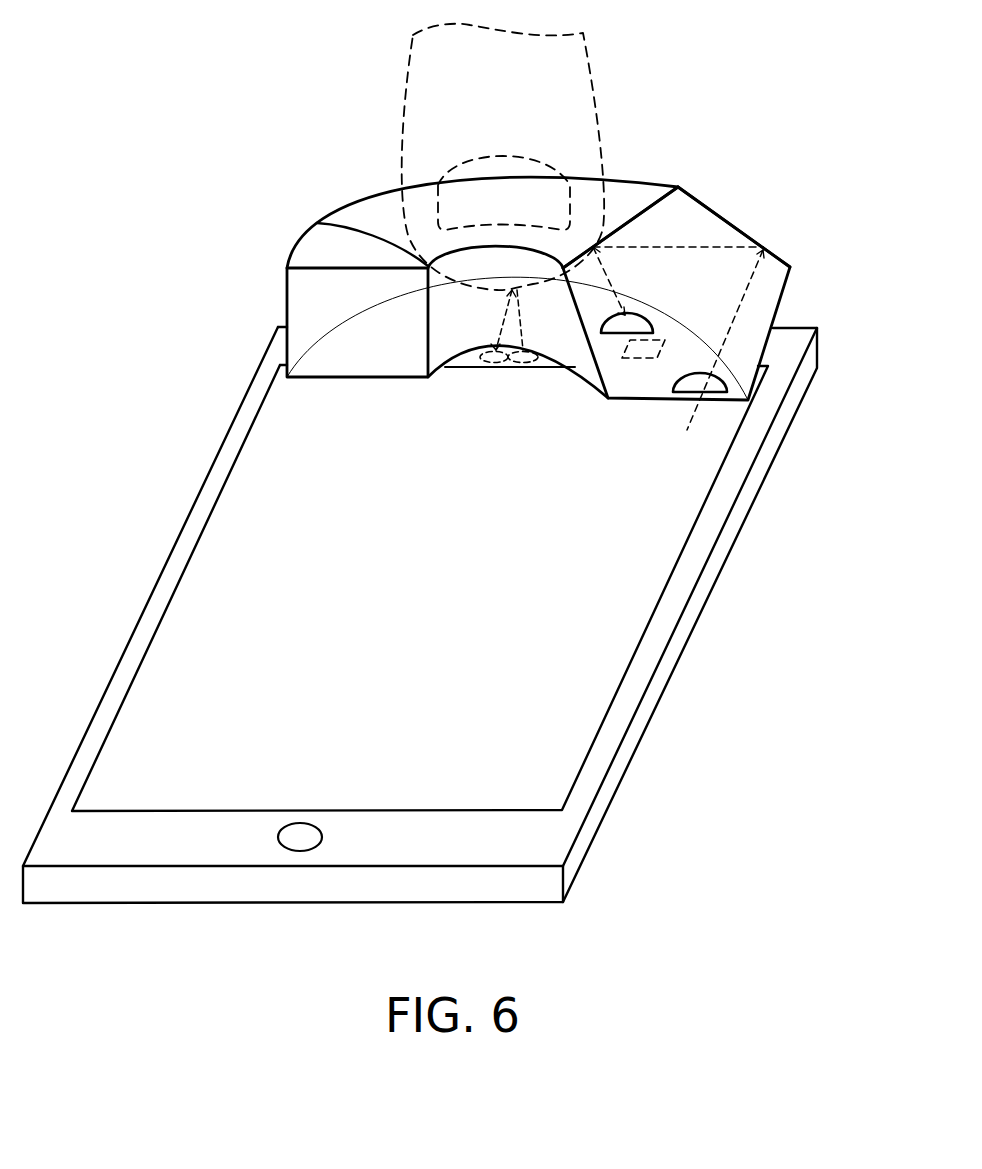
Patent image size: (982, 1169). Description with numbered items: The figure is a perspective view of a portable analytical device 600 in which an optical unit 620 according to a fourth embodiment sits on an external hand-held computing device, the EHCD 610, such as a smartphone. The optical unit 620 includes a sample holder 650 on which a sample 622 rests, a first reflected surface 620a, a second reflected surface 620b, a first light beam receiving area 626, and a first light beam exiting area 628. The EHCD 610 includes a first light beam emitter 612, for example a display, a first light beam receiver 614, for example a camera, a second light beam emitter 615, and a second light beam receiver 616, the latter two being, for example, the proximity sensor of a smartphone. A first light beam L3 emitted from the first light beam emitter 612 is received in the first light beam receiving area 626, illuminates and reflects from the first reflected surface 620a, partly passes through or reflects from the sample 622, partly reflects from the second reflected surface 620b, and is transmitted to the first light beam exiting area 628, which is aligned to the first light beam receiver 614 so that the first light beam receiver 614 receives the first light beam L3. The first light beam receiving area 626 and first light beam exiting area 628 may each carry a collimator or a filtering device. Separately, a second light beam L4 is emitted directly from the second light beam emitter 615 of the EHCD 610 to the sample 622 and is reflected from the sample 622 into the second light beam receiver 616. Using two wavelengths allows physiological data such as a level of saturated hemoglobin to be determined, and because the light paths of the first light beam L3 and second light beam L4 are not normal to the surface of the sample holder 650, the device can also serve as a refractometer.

The electronic device 600 is at (887, 58).
The EHCD 610 is at (628, 750).
The first light beam emitter 612 is at (582, 675).
The first light beam receiver 614 is at (632, 360).
The second light beam emitter 615 is at (525, 363).
The second light beam receiver 616 is at (488, 363).
The optical unit 620 is at (773, 285).
The first reflected surface 620a is at (712, 211).
The second reflected surface 620b is at (678, 187).
The sample 622 is at (408, 82).
The first light beam receiving area 626 is at (707, 387).
The first light beam exiting area 628 is at (623, 332).
The sample holder 650 is at (317, 223).
The first light beam L3 is at (742, 302).
The second light beam L4 is at (500, 316).